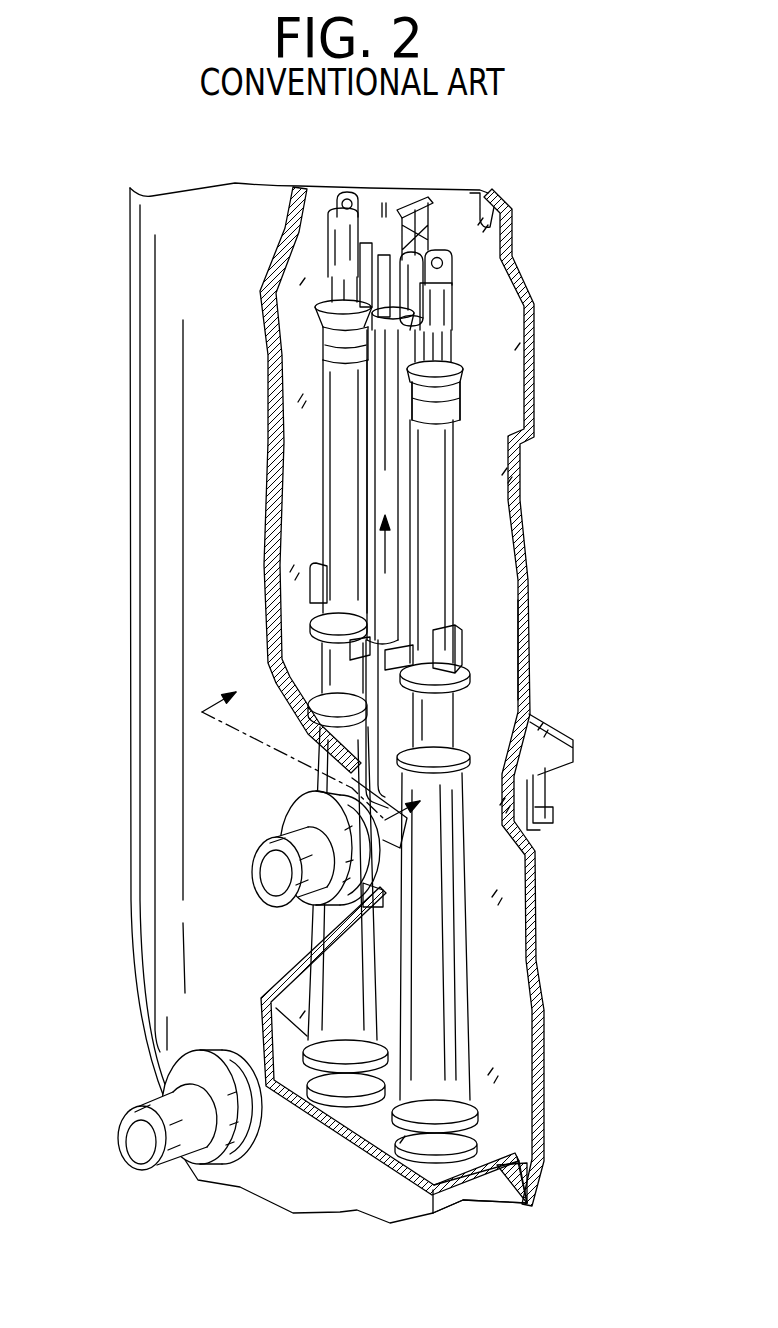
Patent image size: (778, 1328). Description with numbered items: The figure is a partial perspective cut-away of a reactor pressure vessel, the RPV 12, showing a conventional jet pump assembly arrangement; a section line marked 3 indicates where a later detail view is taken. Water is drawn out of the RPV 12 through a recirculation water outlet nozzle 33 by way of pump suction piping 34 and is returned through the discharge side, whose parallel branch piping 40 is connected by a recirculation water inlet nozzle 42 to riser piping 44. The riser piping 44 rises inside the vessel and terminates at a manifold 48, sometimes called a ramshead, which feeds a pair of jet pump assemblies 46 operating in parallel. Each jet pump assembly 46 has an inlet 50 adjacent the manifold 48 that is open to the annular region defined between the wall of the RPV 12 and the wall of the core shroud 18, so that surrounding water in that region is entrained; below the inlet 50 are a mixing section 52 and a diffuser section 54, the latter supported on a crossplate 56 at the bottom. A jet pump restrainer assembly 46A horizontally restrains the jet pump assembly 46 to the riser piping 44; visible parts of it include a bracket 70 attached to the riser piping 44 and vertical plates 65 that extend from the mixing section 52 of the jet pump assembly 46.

The RPV 12 is at (265, 1203).
The core shroud 18 is at (537, 930).
The recirculation water outlet nozzle 33 is at (227, 1153).
The pump suction piping 34 is at (130, 1145).
The piping branch 40 is at (263, 893).
The recirculation water inlet nozzle 42 is at (293, 813).
The riser piping 44 is at (377, 458).
The jet pump assembly 46 is at (335, 397).
The jet pump restrainer assembly 46A is at (519, 612).
The manifold 48 is at (437, 304).
The inlet 50 is at (455, 365).
The mixing section 52 is at (458, 505).
The diffuser section 54 is at (445, 1027).
The crossplate 56 is at (493, 1185).
The vertical plates 65 is at (462, 635).
The bracket 70 is at (477, 677).
The section line 3 is at (321, 742).